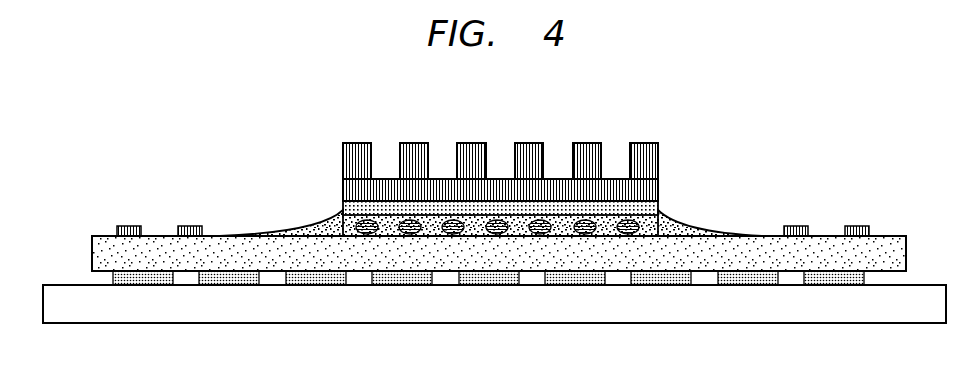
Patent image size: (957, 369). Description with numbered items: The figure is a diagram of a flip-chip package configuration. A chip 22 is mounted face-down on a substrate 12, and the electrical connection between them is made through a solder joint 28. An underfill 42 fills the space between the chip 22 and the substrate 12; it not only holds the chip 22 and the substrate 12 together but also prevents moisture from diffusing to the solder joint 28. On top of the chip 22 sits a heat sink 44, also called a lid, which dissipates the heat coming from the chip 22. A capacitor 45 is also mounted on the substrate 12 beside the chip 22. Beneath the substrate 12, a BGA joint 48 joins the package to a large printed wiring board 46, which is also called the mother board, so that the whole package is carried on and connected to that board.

The substrate 12 is at (97, 250).
The chip 22 is at (343, 207).
The solder joint 28 is at (347, 226).
The underfill 42 is at (677, 218).
The heat sink (lid) 44 is at (475, 143).
The capacitor 45 is at (858, 225).
The printed wiring board 46 is at (494, 307).
The BGA joint 48 is at (229, 280).